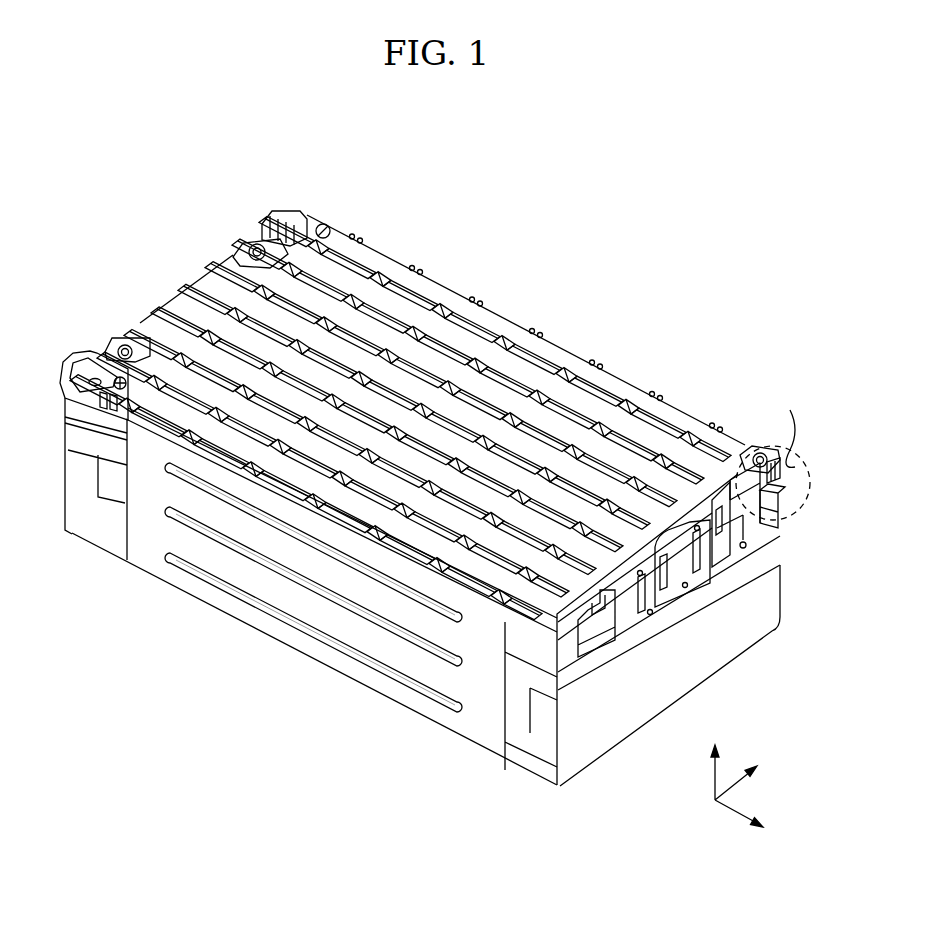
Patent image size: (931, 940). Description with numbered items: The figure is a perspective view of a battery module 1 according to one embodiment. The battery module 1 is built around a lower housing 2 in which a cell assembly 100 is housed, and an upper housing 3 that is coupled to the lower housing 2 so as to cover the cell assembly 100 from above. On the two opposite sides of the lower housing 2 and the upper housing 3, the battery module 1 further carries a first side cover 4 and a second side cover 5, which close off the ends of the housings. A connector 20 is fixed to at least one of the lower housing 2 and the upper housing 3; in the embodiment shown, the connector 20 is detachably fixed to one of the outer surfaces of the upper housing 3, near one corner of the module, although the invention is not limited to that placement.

The battery module 1 is at (570, 292).
The lower housing 2 is at (614, 738).
The upper housing 3 is at (685, 416).
The first side cover 4 is at (700, 610).
The second side cover 5 is at (87, 470).
The connector 20 is at (777, 524).
The cell assembly 100 is at (483, 723).